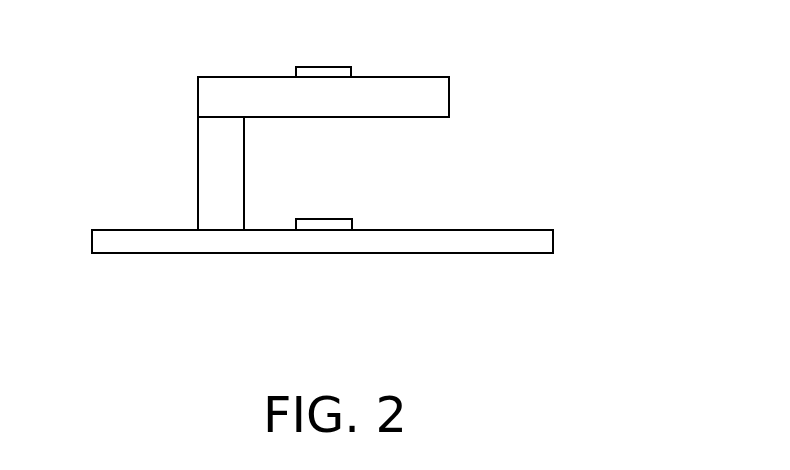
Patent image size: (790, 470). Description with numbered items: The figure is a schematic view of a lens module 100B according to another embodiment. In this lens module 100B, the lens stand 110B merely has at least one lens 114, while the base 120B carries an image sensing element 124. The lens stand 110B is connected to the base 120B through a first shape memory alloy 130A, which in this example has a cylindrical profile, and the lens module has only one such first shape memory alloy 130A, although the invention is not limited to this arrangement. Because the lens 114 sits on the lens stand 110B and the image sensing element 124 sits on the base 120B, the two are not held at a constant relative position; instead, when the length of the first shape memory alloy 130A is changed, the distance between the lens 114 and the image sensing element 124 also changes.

The lens module 100B is at (560, 325).
The lens stand 110B is at (437, 99).
The lens 114 is at (345, 70).
The base 120B is at (547, 242).
The image sensing element 124 is at (343, 223).
The first shape memory alloy 130A is at (203, 190).